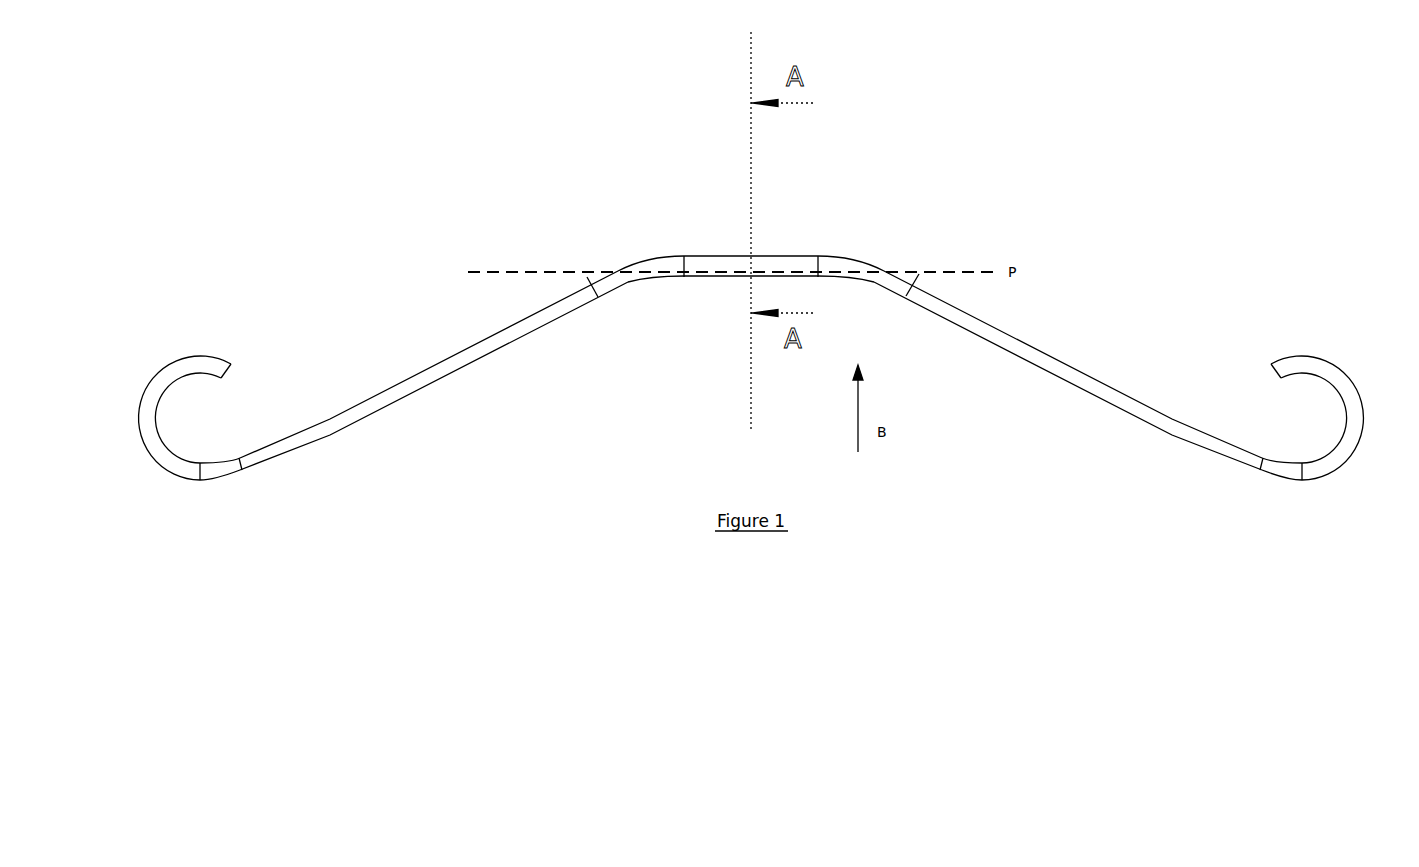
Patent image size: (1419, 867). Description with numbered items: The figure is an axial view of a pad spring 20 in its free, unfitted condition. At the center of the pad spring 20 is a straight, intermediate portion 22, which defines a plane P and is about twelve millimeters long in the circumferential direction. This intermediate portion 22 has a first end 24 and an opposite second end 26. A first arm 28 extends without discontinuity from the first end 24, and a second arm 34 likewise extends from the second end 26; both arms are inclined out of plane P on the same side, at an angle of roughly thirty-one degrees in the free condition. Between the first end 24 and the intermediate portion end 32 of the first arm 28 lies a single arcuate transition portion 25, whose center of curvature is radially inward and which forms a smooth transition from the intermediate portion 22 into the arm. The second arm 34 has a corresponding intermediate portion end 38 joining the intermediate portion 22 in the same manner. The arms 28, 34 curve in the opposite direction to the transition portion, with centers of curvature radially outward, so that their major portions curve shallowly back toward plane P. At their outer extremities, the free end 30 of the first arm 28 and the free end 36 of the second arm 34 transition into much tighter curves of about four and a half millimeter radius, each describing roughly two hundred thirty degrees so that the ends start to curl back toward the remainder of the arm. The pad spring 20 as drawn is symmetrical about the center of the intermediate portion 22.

The pad spring 20 is at (858, 223).
The straight, intermediate portion 22 is at (715, 263).
The first end 24 is at (685, 258).
The arcuate transition portion 25 is at (898, 197).
The second end 26 is at (820, 256).
The first arm 28 is at (432, 377).
The free end 30 is at (229, 372).
The intermediate portion end 32 is at (598, 292).
The second arm 34 is at (1053, 368).
The free end 36 is at (1277, 377).
The intermediate portion end 38 is at (921, 273).